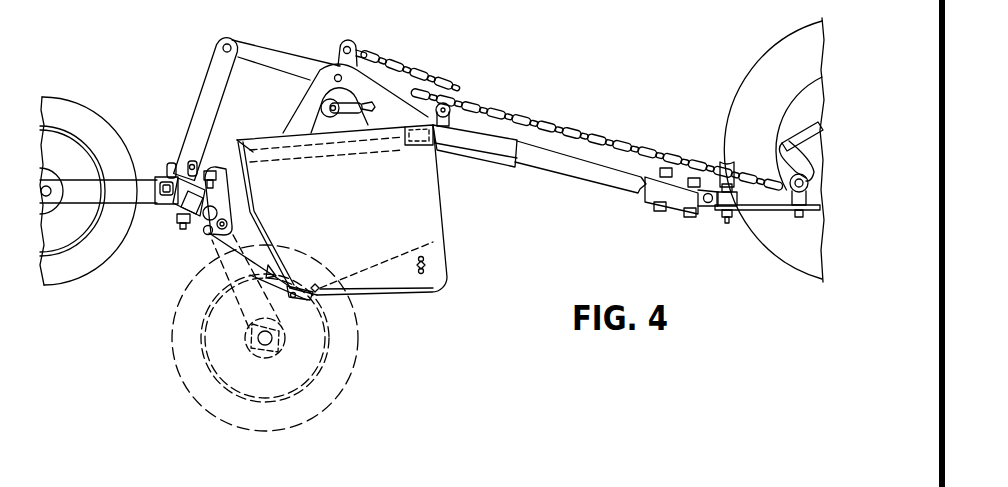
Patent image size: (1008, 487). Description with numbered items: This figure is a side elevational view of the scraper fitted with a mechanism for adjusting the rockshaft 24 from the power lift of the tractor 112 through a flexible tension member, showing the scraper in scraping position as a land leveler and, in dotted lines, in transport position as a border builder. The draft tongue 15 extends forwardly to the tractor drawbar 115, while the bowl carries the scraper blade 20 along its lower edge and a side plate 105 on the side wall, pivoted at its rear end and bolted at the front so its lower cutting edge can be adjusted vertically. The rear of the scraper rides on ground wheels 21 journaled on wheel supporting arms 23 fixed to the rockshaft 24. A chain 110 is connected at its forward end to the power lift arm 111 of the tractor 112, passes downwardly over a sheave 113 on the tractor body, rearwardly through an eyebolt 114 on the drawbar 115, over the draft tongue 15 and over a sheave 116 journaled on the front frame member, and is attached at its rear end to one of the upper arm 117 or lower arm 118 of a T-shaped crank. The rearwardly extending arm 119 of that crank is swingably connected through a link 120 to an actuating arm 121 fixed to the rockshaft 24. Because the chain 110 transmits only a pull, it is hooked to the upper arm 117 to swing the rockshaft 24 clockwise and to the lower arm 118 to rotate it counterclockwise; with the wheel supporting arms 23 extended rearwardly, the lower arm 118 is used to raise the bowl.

The draft tongue 15 is at (572, 170).
The scraper blade 20 is at (312, 300).
The ground wheels 21 is at (173, 338).
The wheel supporting arms 23 is at (140, 196).
The rockshaft 24 is at (206, 232).
The side plate 105 is at (420, 291).
The chain 110 is at (420, 63).
The power lift arm 111 is at (795, 137).
The tractor 112 is at (753, 70).
The sheave 113 is at (790, 177).
The eyebolt 114 is at (726, 167).
The drawbar 115 is at (717, 207).
The sheave 116 is at (453, 99).
The upper arm 117 is at (362, 53).
The lower arm 118 is at (338, 114).
The rearwardly extending arm 119 is at (270, 58).
The link 120 is at (205, 107).
The actuating arm 121 is at (173, 168).